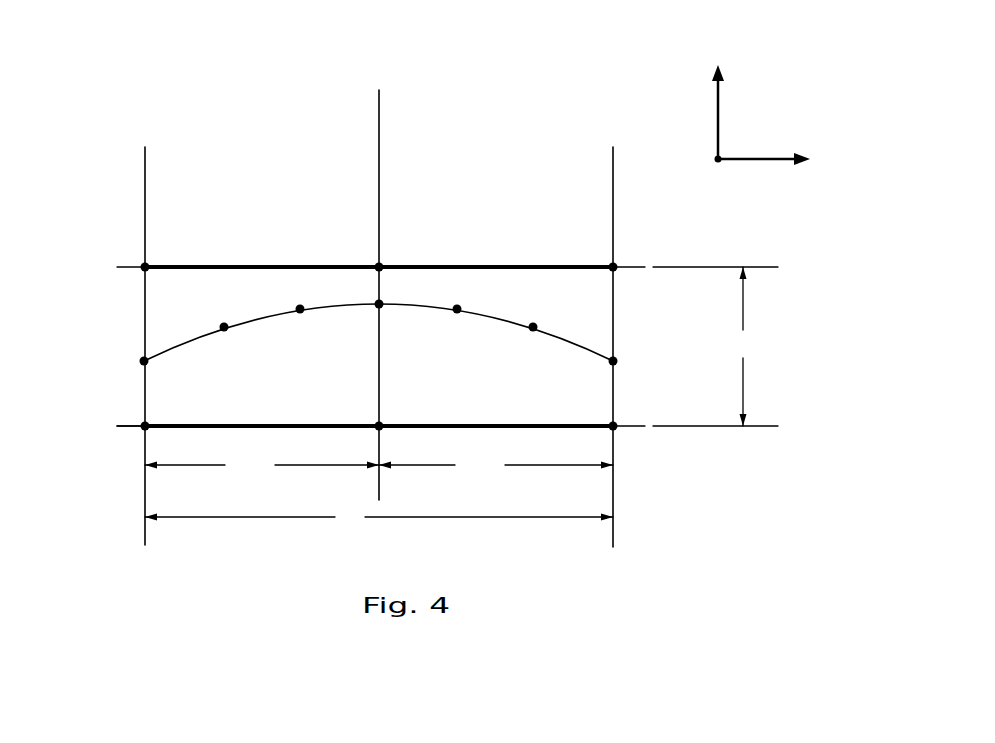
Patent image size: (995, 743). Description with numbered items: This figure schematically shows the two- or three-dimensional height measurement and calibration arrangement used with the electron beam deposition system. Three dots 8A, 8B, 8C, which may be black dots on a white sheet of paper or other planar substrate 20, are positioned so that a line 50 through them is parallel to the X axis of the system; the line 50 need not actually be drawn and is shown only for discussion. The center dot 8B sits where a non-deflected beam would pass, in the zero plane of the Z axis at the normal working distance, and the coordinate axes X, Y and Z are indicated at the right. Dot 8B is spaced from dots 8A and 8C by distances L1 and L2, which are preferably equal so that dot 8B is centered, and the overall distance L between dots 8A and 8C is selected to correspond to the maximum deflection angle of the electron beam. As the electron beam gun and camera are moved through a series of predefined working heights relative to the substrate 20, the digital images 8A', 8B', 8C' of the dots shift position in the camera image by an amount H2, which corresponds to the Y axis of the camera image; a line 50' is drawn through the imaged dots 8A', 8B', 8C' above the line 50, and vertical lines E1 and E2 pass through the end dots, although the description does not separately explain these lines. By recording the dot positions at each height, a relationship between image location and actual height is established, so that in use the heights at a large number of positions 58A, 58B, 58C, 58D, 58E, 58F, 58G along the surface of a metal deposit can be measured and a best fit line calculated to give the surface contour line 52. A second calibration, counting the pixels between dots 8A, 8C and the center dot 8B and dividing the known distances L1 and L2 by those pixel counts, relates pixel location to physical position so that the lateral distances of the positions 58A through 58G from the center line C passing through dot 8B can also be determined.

The substrate 20 is at (127, 425).
The line 50 is at (447, 394).
The upper straight reference line 50' is at (447, 239).
The surface contour line 52 is at (177, 345).
The position on surface contour line 58A is at (144, 361).
The position on surface contour line 58B is at (224, 326).
The position on surface contour line 58C is at (300, 308).
The position on surface contour line 58D is at (378, 306).
The position on surface contour line 58E is at (459, 308).
The position on surface contour line 58F is at (534, 325).
The position on surface contour line 58G is at (613, 361).
The dot 8A is at (185, 404).
The center dot 8B is at (416, 404).
The dot 8C is at (649, 395).
The digital image of dot 8A' is at (182, 237).
The digital image of dot 8B' is at (410, 233).
The digital image of dot 8C' is at (651, 240).
The first edge line E1 is at (145, 172).
The second edge line E2 is at (613, 192).
The center line C is at (380, 160).
The distance between end dots L is at (379, 518).
The distance L1 is at (262, 466).
The distance L2 is at (496, 466).
The image position shift H2 is at (743, 346).
The X axis X is at (779, 159).
The Y axis Y is at (710, 169).
The Z axis Z is at (717, 93).